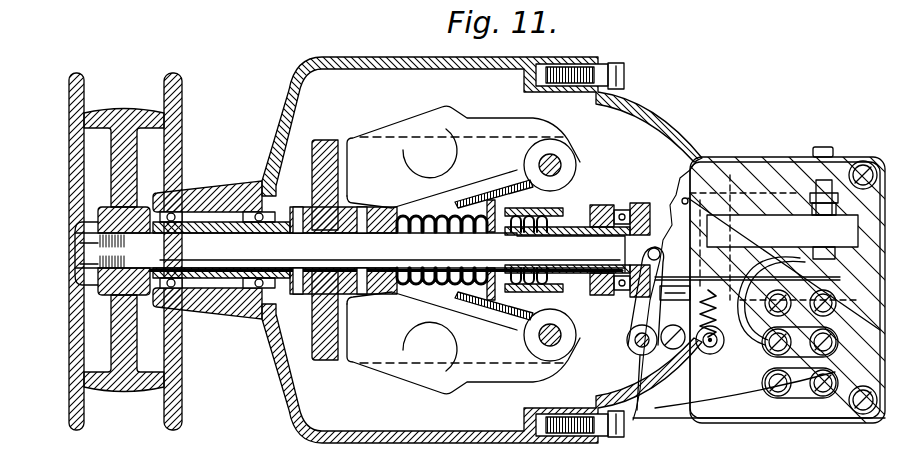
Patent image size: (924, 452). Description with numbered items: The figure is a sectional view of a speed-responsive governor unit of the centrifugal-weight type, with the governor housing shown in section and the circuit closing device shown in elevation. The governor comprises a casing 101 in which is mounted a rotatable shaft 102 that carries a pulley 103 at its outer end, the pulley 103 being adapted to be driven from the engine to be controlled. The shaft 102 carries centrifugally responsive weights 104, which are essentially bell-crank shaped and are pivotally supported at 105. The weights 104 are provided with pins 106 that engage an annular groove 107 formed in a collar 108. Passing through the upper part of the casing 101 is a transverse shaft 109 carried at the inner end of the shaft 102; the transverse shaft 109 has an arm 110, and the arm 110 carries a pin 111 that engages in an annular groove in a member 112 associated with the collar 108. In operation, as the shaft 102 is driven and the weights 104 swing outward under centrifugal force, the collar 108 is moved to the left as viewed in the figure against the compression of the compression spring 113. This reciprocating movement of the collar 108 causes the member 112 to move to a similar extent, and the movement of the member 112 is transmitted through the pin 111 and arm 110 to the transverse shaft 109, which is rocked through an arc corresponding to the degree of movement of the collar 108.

The casing 101 is at (312, 70).
The rotatable shaft 102 is at (213, 235).
The pulley 103 is at (118, 108).
The centrifugally responsive weights 104 is at (413, 128).
The pivot 105 is at (549, 156).
The pins 106 is at (606, 212).
The annular groove 107 is at (580, 210).
The collar 108 is at (608, 204).
The transverse shaft 109 is at (638, 346).
The arm 110 is at (626, 312).
The pin 111 is at (686, 202).
The member 112 is at (676, 186).
The compression spring 113 is at (462, 222).